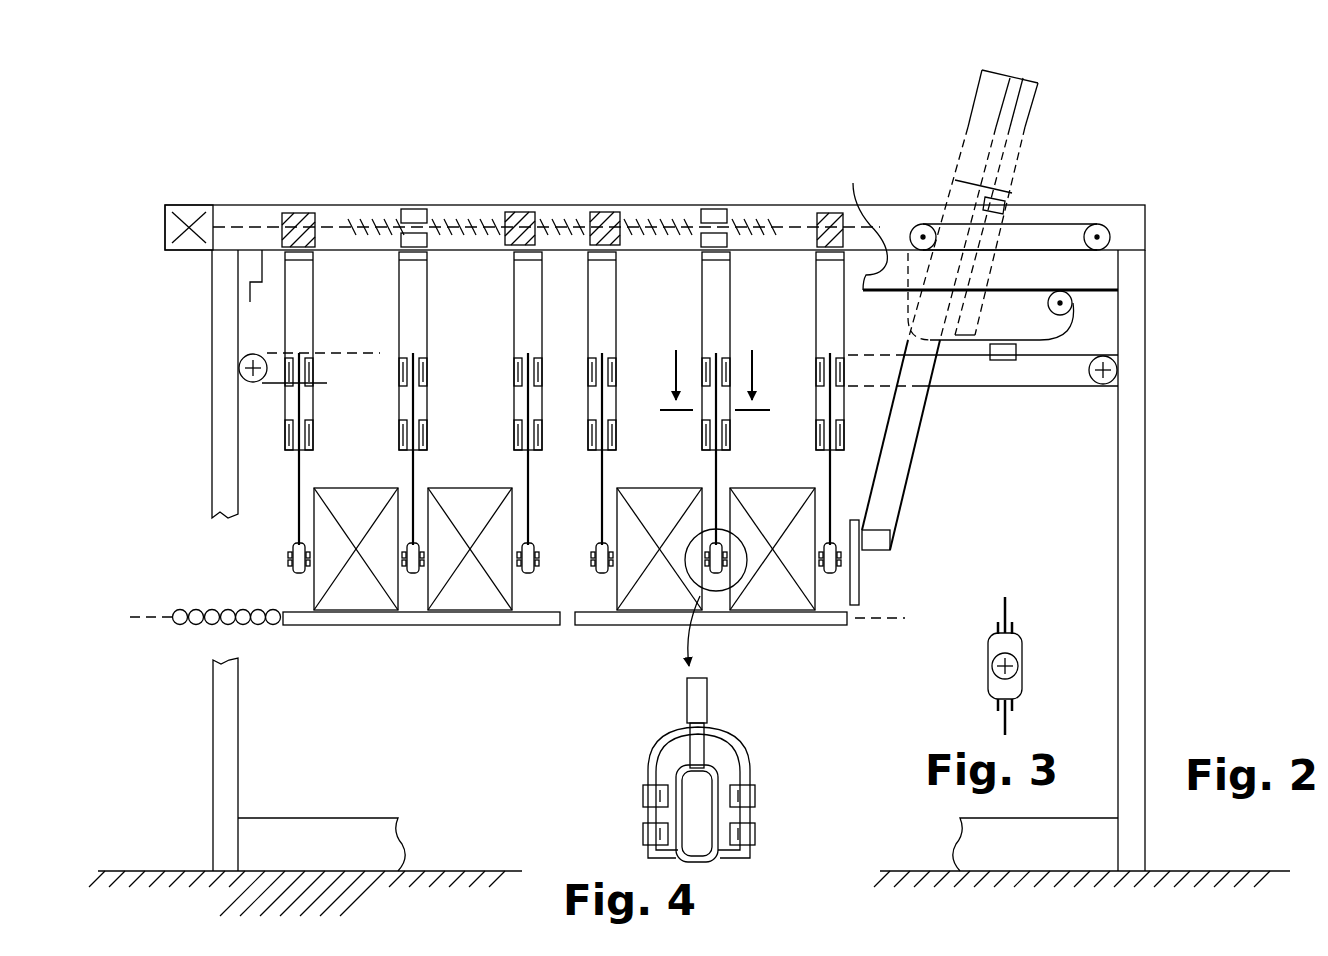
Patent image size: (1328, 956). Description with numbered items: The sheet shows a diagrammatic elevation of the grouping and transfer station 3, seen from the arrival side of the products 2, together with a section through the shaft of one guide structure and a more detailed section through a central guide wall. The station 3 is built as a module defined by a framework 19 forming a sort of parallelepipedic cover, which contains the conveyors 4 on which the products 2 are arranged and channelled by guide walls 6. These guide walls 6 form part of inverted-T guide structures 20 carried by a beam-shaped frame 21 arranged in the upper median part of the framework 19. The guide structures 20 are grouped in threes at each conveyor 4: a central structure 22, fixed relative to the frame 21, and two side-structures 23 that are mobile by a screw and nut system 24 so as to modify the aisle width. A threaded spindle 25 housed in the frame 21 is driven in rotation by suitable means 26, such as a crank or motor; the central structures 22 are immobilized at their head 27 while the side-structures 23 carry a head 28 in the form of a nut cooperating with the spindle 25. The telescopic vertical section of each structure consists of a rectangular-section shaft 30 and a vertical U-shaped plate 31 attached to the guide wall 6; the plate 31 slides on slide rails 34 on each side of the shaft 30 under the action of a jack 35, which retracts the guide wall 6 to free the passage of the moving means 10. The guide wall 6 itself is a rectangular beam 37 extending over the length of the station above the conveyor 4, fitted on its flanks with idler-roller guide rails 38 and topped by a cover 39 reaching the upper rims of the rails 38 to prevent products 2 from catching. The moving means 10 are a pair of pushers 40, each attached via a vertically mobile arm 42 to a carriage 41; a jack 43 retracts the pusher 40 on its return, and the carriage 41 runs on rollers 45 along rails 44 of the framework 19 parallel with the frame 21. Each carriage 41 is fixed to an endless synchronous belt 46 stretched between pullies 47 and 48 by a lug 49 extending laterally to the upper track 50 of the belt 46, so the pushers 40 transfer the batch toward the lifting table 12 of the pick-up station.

In FIG. 2, the products 2 is at (355, 488).
In FIG. 2, the grouping station 3 is at (714, 380).
In FIG. 2, the conveyor 4 is at (357, 626).
In FIG. 2, the guide wall 6 is at (290, 557).
In FIG. 2, the means of moving the batches 10 is at (925, 472).
In FIG. 2, the lifting table 12 is at (220, 606).
In FIG. 2, the framework 19 is at (1150, 525).
In FIG. 2, the guide structures 20 is at (628, 333).
In FIG. 2, the frame 21 is at (752, 205).
In FIG. 2, the central structure 22 is at (699, 262).
In FIG. 2, the side-structures 23 is at (318, 270).
In FIG. 2, the screw and nut system 24 is at (505, 225).
In FIG. 2, the threaded spindle 25 is at (565, 230).
In FIG. 2, the means for driving in rotation 26 is at (163, 228).
In FIG. 2, the head 27 is at (412, 207).
In FIG. 2, the head in the form of a nut 28 is at (522, 212).
In FIG. 3, the shaft 30 is at (987, 670).
In FIG. 3, the plate 31 is at (1006, 600).
In FIG. 4, the plate 31 is at (696, 698).
In FIG. 3, the slide rails 34 is at (993, 625).
In FIG. 3, the jack 35 is at (1016, 656).
In FIG. 4, the beam 37 is at (698, 862).
In FIG. 4, the guide rails 38 is at (640, 812).
In FIG. 4, the cover 39 is at (660, 740).
In FIG. 2, the pusher 40 is at (859, 583).
In FIG. 2, the carriage 41 is at (1070, 224).
In FIG. 2, the arm 42 is at (958, 190).
In FIG. 2, the jack 43 is at (1008, 212).
In FIG. 2, the rails 44 is at (250, 302).
In FIG. 2, the rollers 45 is at (1111, 240).
In FIG. 2, the endless belt 46 is at (975, 392).
In FIG. 2, the pullies 47 is at (1114, 378).
In FIG. 2, the pullies 48 is at (248, 380).
In FIG. 2, the lug 49 is at (1030, 338).
In FIG. 2, the upper track 50 is at (1032, 362).